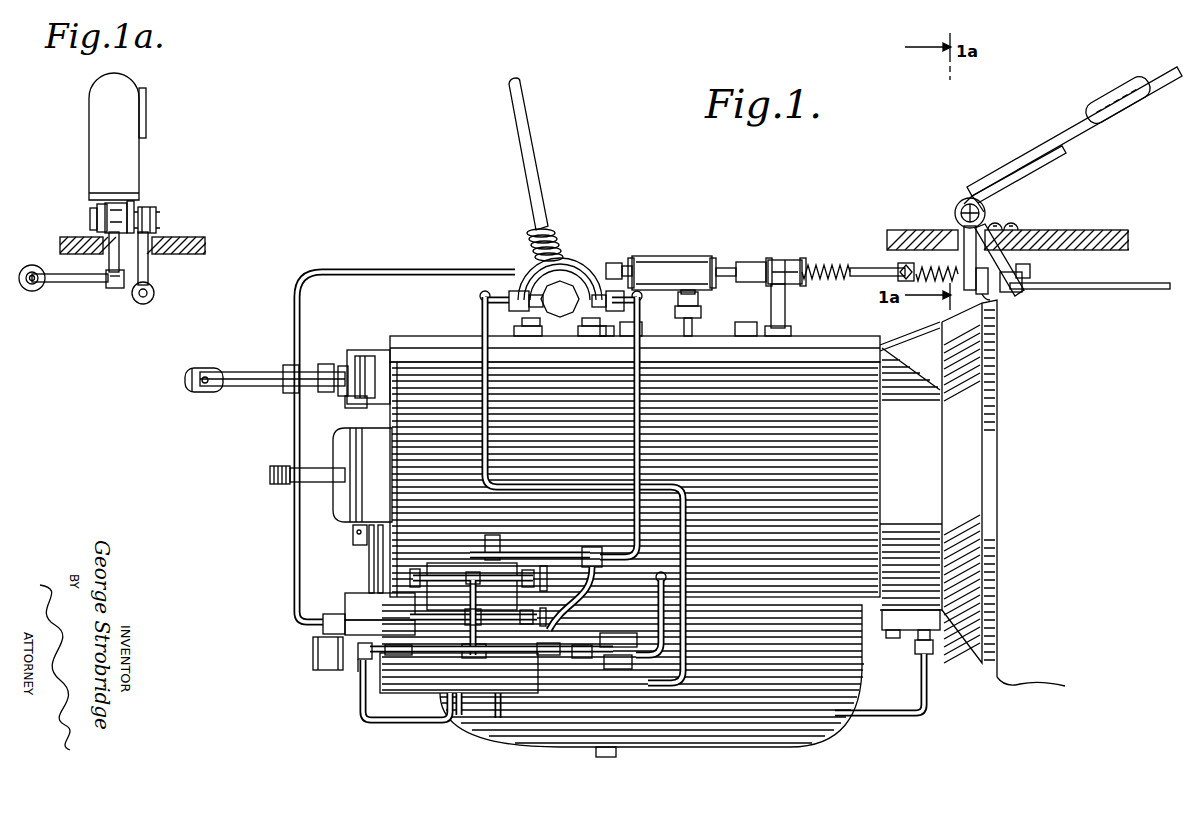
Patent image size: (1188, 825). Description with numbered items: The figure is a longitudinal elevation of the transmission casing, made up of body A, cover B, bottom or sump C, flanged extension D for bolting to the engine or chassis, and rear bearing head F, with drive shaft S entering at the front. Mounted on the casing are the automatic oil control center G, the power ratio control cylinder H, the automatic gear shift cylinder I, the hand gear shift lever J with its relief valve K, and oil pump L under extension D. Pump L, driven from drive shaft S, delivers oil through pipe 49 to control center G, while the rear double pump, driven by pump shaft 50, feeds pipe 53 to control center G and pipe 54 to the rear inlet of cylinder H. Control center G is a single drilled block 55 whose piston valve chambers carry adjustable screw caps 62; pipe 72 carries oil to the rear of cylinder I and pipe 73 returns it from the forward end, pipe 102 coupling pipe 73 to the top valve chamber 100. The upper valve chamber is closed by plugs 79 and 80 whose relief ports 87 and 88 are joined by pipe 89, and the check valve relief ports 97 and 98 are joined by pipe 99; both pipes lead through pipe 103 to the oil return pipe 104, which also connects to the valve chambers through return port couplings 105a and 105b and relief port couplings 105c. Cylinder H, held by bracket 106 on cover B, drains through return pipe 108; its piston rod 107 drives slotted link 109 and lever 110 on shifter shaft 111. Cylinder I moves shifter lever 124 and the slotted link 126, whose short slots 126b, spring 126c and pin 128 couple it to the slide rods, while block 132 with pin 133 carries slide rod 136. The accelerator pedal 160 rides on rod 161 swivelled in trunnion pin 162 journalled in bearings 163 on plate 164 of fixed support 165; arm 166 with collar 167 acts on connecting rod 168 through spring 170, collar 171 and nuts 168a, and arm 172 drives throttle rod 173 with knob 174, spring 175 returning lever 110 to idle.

In FIG. 1, the casing body A is at (878, 472).
In FIG. 1, the cover B is at (446, 342).
In FIG. 1, the bottom or sump C is at (858, 667).
In FIG. 1, the flanged extension D is at (975, 444).
In FIG. 1, the rear bearing head F is at (352, 498).
In FIG. 1, the automatic oil control center G is at (459, 673).
In FIG. 1, the power ratio control cylinder H is at (660, 262).
In FIG. 1, the automatic gear shift cylinder I is at (374, 352).
In FIG. 1, the hand gear shift lever J is at (538, 153).
In FIG. 1, the valve K is at (563, 292).
In FIG. 1, the oil pump L is at (940, 632).
In FIG. 1, the drive shaft S is at (268, 481).
In FIG. 1, the pipe 49 is at (874, 716).
In FIG. 1, the pump shaft 50 is at (353, 545).
In FIG. 1, the pipe 53 is at (400, 721).
In FIG. 1, the pipe 54 is at (296, 540).
In FIG. 1, the block 55 is at (459, 716).
In FIG. 1, the screw caps 62 is at (312, 652).
In FIG. 1, the pipe 72 is at (481, 322).
In FIG. 1, the pipe 73 is at (645, 442).
In FIG. 1, the screw-threaded plug 79 is at (418, 571).
In FIG. 1, the screw-threaded plug 80 is at (522, 582).
In FIG. 1, the relief port 87 is at (410, 580).
In FIG. 1, the relief port 88 is at (523, 617).
In FIG. 1, the pipe 89 is at (432, 600).
In FIG. 1, the relief port 97 is at (350, 600).
In FIG. 1, the relief port 98 is at (518, 618).
In FIG. 1, the pipe 99 is at (470, 620).
In FIG. 1, the valve chamber 100 is at (490, 550).
In FIG. 1, the pipe 102 is at (522, 554).
In FIG. 1, the pipe 103 is at (484, 656).
In FIG. 1, the oil return pipe 104 is at (437, 654).
In FIG. 1, the return port coupling 105a is at (396, 656).
In FIG. 1, the return port coupling 105b is at (540, 656).
In FIG. 1, the relief port couplings 105c is at (365, 660).
In FIG. 1, the bracket 106 is at (690, 320).
In FIG. 1, the piston and piston rod 107 is at (728, 265).
In FIG. 1, the return pipe 108 is at (698, 300).
In FIG. 1, the slotted link 109 is at (770, 262).
In FIG. 1, the lever 110 is at (806, 280).
In FIG. 1, the shifter shaft 111 is at (786, 312).
In FIG. 1, the shifter lever 124 is at (250, 378).
In FIG. 1, the link 126 is at (237, 388).
In FIG. 1, the short slots 126b is at (272, 388).
In FIG. 1, the spring 126c is at (188, 380).
In FIG. 1, the pin 128 is at (290, 364).
In FIG. 1, the block 132 is at (340, 396).
In FIG. 1, the pin 133 is at (322, 366).
In FIG. 1, the slide rod 136 is at (357, 399).
In FIG. 1a, the pedal 160 is at (135, 151).
In FIG. 1, the pedal 160 is at (1060, 130).
In FIG. 1a, the rod 161 is at (108, 265).
In FIG. 1, the rod 161 is at (963, 228).
In FIG. 1a, the trunnion pin 162 is at (160, 217).
In FIG. 1, the trunnion pin 162 is at (990, 207).
In FIG. 1a, the bearings 163 is at (94, 220).
In FIG. 1, the bearings 163 is at (962, 205).
In FIG. 1, the plate 164 is at (1013, 228).
In FIG. 1a, the fixed support 165 is at (208, 247).
In FIG. 1, the fixed support 165 is at (1085, 232).
In FIG. 1a, the arm 166 is at (90, 283).
In FIG. 1, the arm 166 is at (990, 292).
In FIG. 1a, the bevelled collar or fork 167 is at (30, 293).
In FIG. 1a, the connecting rod 168 is at (32, 265).
In FIG. 1, the connecting rod 168 is at (860, 266).
In FIG. 1, the nuts 168a is at (1030, 270).
In FIG. 1a, the coiled spring 170 is at (40, 287).
In FIG. 1, the coiled spring 170 is at (942, 268).
In FIG. 1, the adjustable collar 171 is at (903, 266).
In FIG. 1a, the arm 172 is at (150, 269).
In FIG. 1, the arm 172 is at (1000, 256).
In FIG. 1a, the rod 173 is at (156, 292).
In FIG. 1, the rod 173 is at (1058, 289).
In FIG. 1a, the knob 174 is at (148, 305).
In FIG. 1, the knob 174 is at (1010, 292).
In FIG. 1, the spring 175 is at (820, 264).